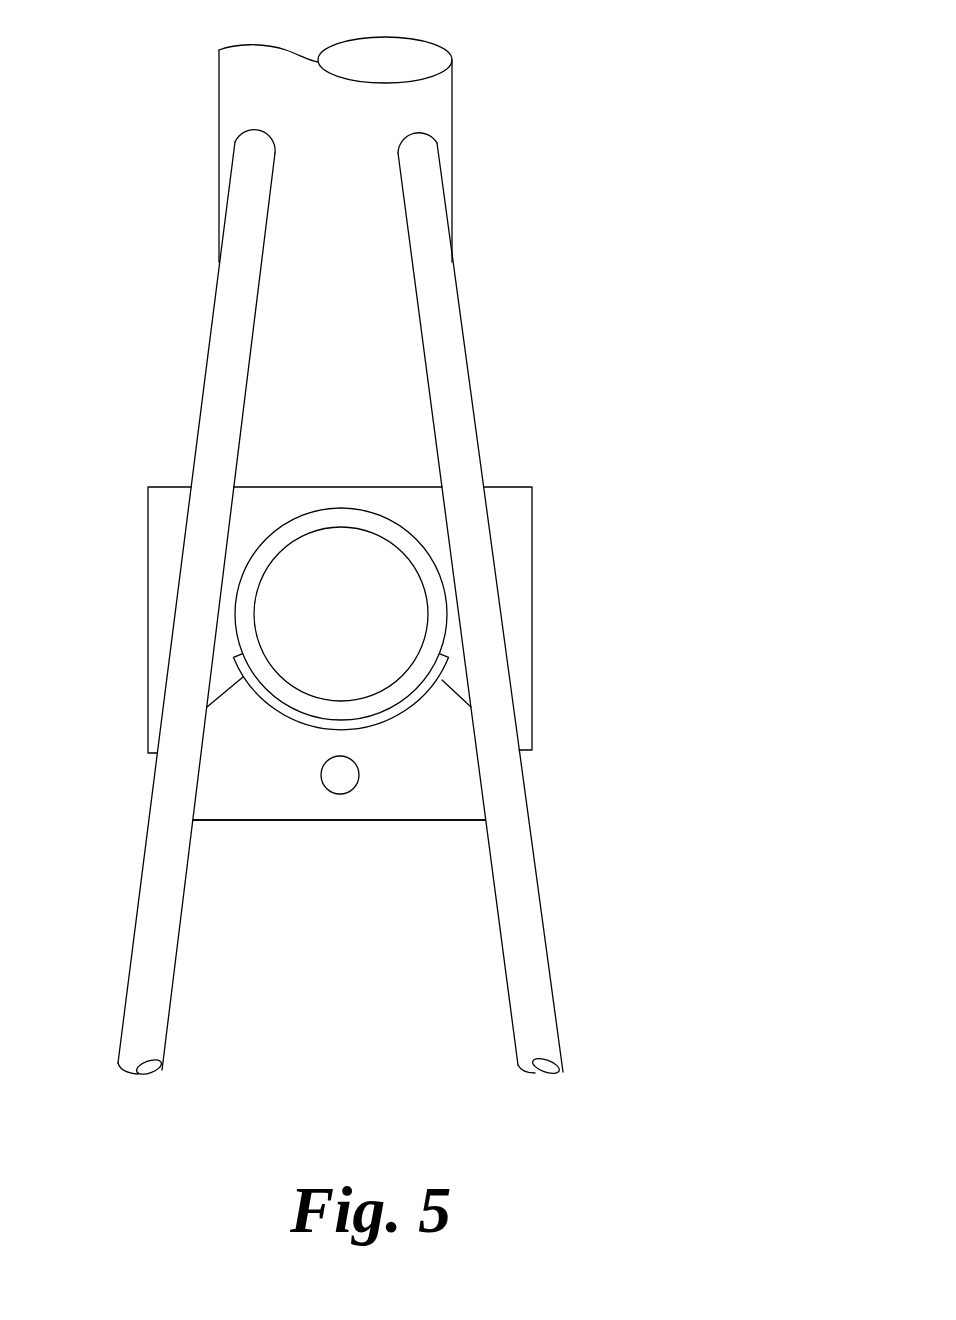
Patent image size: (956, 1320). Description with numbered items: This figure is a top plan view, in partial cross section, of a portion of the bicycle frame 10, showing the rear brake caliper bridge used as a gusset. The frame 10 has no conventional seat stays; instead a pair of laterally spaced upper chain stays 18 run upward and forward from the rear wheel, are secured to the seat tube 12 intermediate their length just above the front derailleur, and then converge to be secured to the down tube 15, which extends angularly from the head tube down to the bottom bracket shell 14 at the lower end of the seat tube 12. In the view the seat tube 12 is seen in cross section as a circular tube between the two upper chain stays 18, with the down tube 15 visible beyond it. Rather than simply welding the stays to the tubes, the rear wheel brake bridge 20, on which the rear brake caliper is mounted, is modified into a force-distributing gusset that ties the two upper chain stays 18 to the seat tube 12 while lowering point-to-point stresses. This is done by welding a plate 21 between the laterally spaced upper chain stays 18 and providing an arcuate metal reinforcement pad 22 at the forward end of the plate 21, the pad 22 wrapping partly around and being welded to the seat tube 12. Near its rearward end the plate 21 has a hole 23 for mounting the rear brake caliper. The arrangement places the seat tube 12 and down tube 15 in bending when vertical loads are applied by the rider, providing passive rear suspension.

The bicycle frame 10 is at (657, 317).
The seat tube 12 is at (322, 508).
The bottom bracket shell 14 is at (532, 503).
The down tube 15 is at (452, 86).
The upper chain stays 18 is at (203, 392).
The rear wheel brake bridge 20 is at (425, 821).
The plate 21 is at (429, 774).
The arcuate metal reinforcement pad 22 is at (287, 718).
The hole 23 is at (332, 795).